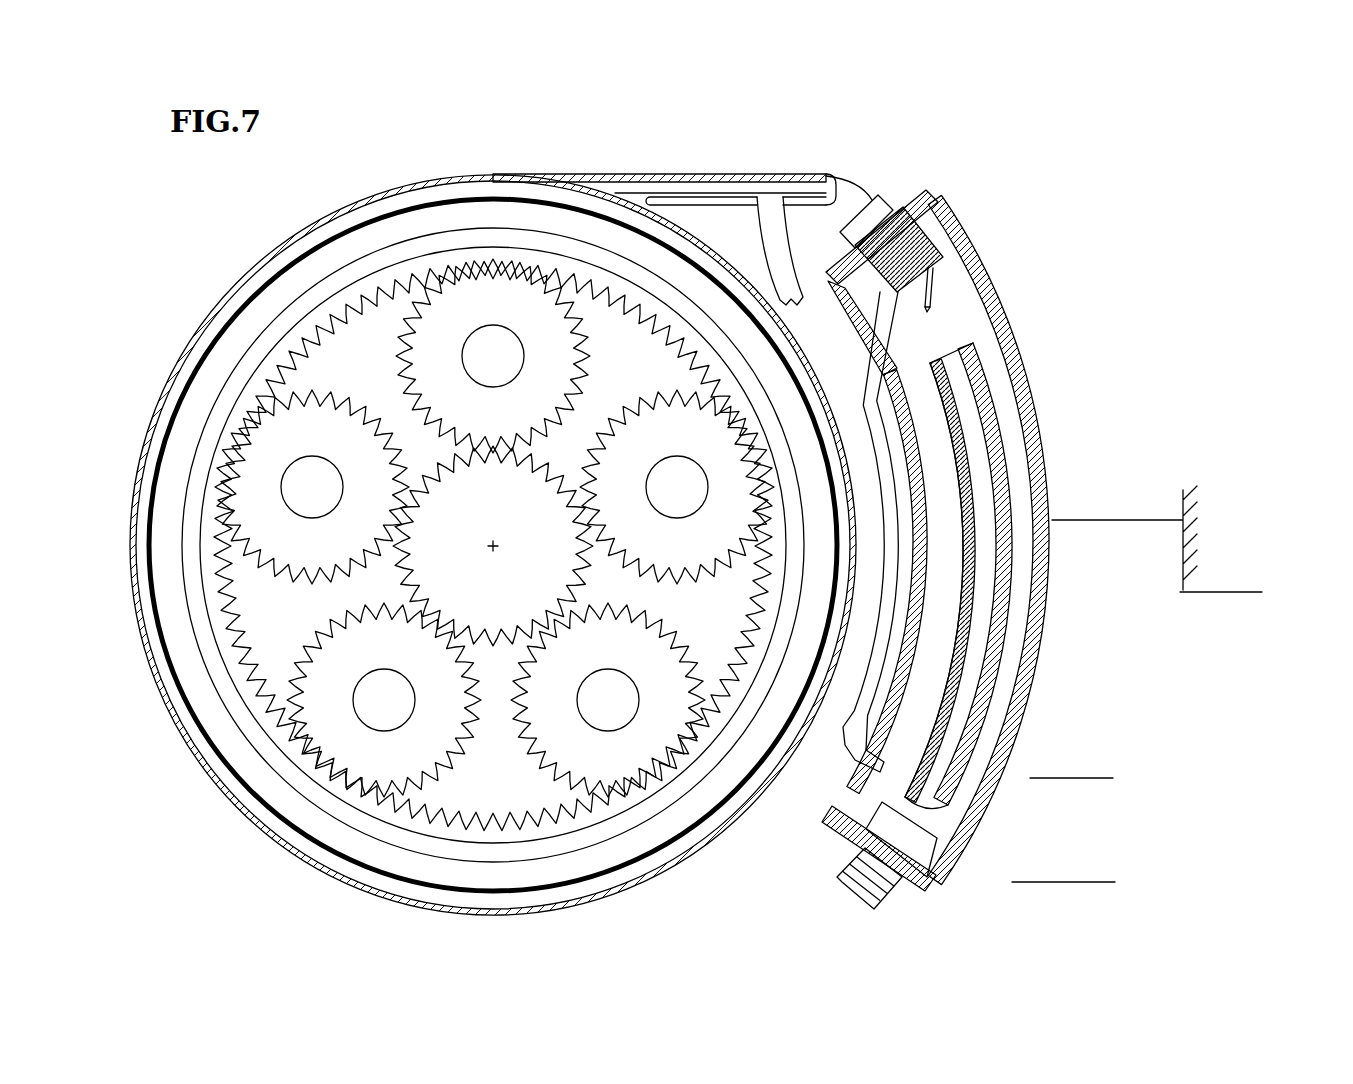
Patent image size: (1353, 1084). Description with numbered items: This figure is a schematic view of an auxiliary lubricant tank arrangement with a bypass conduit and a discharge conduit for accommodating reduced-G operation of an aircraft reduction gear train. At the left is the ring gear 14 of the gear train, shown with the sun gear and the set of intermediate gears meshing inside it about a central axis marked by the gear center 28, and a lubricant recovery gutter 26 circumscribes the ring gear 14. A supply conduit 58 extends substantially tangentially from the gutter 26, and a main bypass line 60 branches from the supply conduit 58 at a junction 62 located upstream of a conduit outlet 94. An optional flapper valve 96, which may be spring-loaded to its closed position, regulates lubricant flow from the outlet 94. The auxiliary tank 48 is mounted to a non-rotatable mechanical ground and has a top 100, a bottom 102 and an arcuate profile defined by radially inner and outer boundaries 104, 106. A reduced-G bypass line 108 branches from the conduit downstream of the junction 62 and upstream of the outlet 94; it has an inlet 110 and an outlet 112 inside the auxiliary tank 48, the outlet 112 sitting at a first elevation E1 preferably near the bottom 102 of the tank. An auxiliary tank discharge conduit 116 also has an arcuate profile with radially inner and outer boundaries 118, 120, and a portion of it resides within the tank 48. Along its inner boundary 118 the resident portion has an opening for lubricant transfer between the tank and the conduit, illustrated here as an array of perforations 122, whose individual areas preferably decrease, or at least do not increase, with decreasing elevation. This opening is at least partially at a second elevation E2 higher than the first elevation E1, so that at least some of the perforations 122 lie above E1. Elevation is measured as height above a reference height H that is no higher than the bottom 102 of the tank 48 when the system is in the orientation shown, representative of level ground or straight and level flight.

The ring gear 14 is at (363, 290).
The lubricant recovery gutter 26 is at (388, 200).
The sun gear 28 is at (499, 550).
The auxiliary tank 48 is at (1035, 420).
The supply conduit 58 is at (697, 191).
The main bypass line 60 is at (757, 236).
The junction 62 is at (793, 203).
The conduit outlet 94 is at (933, 283).
The flapper valve 96 is at (930, 298).
The top 100 is at (912, 198).
The bottom 102 is at (910, 888).
The radially inner boundary 104 is at (867, 357).
The radially outer boundary 106 is at (1033, 539).
The reduced-G bypass line 108 is at (857, 713).
The inlet 110 is at (930, 243).
The outlet 112 is at (828, 813).
The auxiliary tank discharge conduit 116 is at (1011, 576).
The radially inner boundary 118 is at (960, 605).
The radially outer boundary 120 is at (1000, 545).
The perforations 122 is at (930, 645).
The first elevation E1 is at (1083, 778).
The second elevation E2 is at (1247, 592).
The reference height H is at (1083, 882).